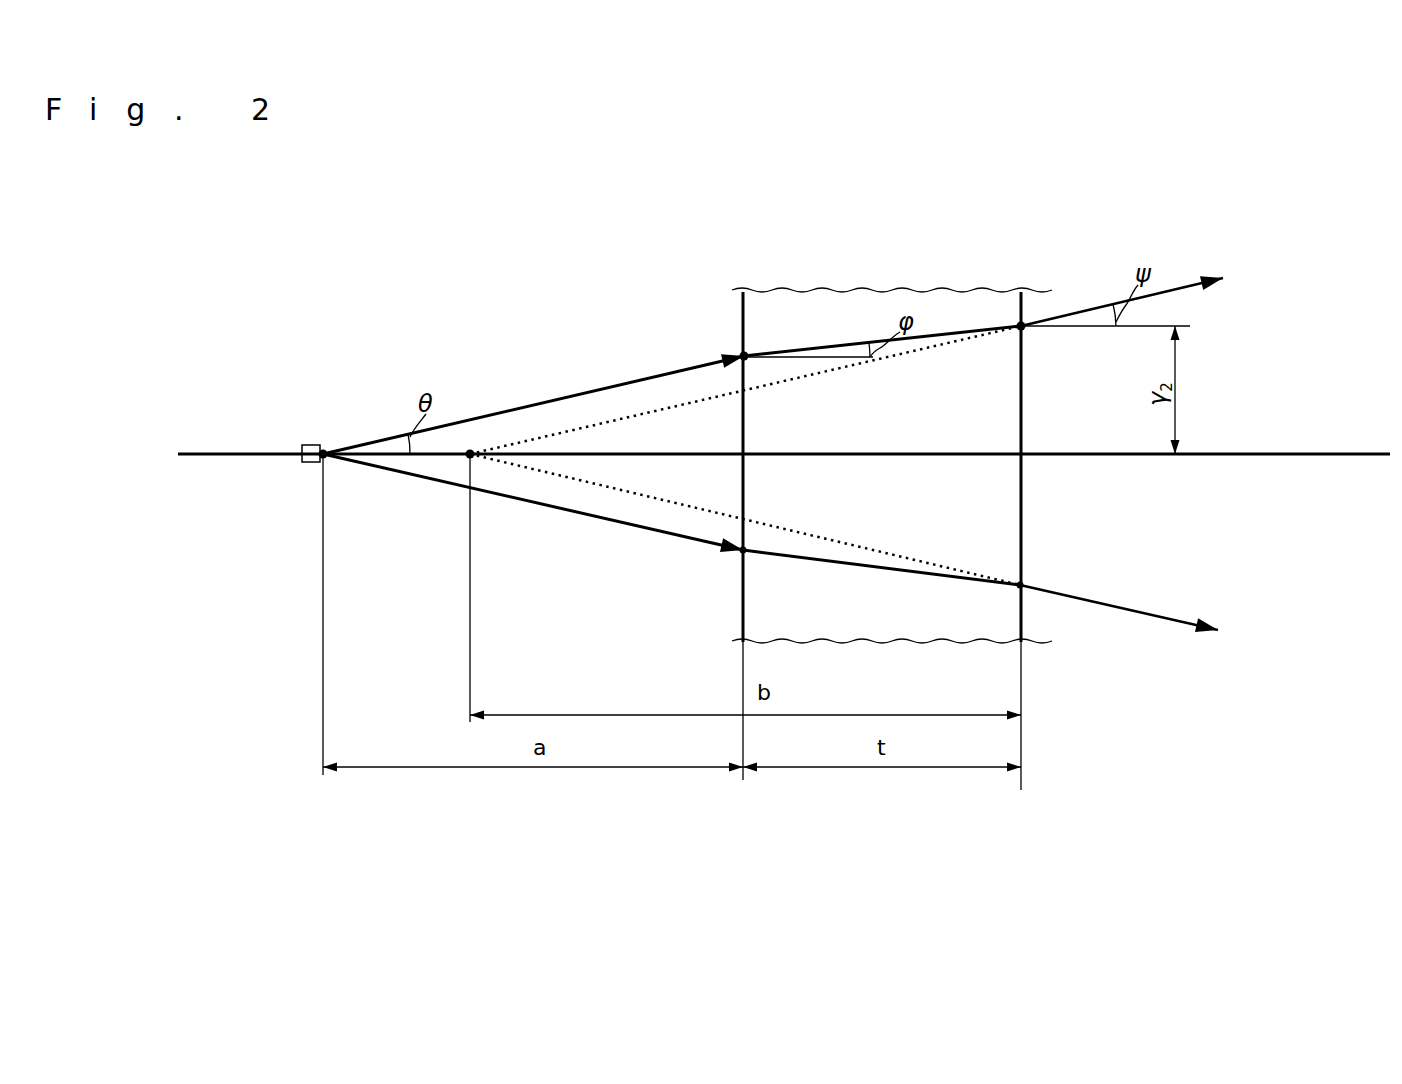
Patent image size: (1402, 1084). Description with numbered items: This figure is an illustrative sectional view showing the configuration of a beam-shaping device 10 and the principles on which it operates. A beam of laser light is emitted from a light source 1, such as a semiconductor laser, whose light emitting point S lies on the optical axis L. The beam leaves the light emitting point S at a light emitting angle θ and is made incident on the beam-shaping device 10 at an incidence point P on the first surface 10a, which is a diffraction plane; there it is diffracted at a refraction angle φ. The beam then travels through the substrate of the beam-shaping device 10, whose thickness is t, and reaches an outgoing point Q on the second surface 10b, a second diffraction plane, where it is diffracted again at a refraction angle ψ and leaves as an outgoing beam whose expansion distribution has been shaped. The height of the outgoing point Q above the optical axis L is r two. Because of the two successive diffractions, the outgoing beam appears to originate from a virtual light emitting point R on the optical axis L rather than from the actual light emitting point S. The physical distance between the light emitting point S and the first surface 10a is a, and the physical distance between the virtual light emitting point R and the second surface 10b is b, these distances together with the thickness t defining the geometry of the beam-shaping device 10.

The light source 1 is at (312, 447).
The beam-shaping device 10 is at (874, 465).
The first surface 10a is at (740, 416).
The second surface 10b is at (1027, 392).
The optical axis L is at (1310, 452).
The light emitting point S is at (328, 447).
The virtual light emitting point R is at (469, 457).
The incidence point P is at (748, 352).
The outgoing point Q is at (1025, 323).